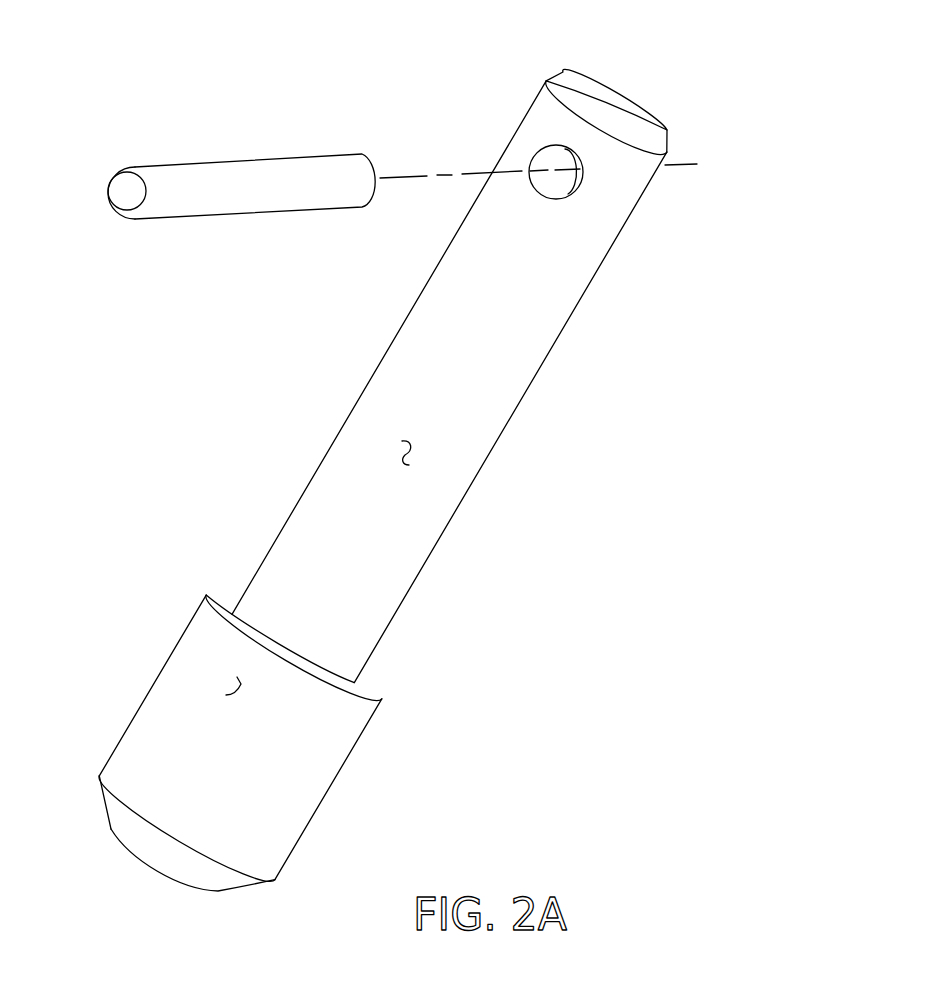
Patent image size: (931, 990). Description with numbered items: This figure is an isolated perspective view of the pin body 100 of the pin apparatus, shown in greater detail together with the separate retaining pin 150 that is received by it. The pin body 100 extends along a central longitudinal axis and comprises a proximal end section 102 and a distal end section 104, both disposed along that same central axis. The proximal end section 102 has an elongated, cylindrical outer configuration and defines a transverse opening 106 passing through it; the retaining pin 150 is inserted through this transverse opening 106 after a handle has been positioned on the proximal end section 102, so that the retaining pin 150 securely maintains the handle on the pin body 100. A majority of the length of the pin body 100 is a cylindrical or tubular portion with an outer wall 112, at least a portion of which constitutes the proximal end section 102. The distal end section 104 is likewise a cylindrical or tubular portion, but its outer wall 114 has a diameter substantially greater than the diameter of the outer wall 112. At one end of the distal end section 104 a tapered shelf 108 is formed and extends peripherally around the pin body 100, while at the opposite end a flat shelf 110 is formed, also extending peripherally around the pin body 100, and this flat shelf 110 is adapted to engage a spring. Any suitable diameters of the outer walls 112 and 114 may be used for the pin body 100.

The pin body 100 is at (207, 422).
The proximal end section 102 is at (622, 313).
The distal end section 104 is at (383, 820).
The transverse opening 106 is at (533, 168).
The tapered shelf 108 is at (118, 818).
The flat shelf 110 is at (363, 688).
The outer wall 112 is at (410, 452).
The outer wall 114 is at (240, 683).
The retaining pin 150 is at (223, 162).